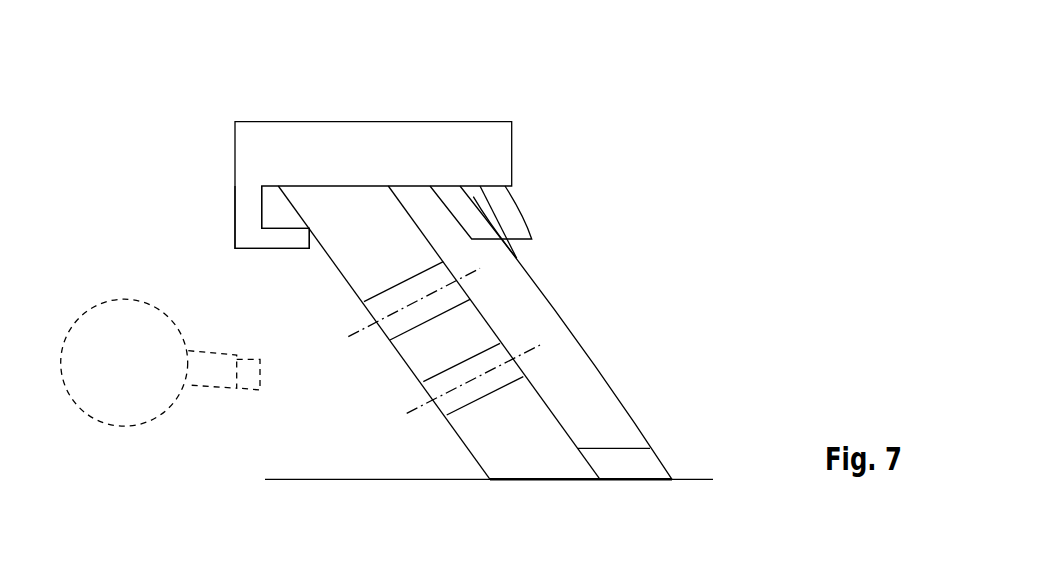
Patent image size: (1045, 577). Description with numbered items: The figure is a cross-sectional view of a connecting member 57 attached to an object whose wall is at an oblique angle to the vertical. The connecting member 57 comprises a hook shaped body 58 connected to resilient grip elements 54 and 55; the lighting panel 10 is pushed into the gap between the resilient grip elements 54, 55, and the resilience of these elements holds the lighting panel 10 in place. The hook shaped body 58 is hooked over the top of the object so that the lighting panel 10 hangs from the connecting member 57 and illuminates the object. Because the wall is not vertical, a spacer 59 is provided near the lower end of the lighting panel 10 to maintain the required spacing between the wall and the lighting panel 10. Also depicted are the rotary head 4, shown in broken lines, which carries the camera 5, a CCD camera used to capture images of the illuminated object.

The rotary head 4 is at (134, 285).
The camera 5 is at (196, 391).
The lighting panel 10 is at (634, 382).
The resilient grip element 54 is at (498, 249).
The resilient grip element 55 is at (537, 208).
The connecting member 57 is at (443, 86).
The hook shaped body 58 is at (249, 128).
The spacer 59 is at (631, 474).